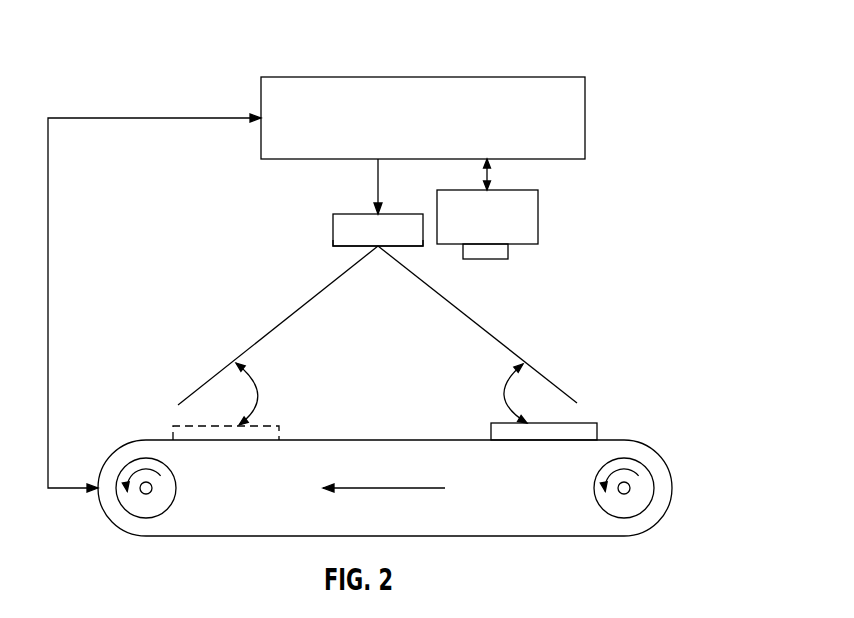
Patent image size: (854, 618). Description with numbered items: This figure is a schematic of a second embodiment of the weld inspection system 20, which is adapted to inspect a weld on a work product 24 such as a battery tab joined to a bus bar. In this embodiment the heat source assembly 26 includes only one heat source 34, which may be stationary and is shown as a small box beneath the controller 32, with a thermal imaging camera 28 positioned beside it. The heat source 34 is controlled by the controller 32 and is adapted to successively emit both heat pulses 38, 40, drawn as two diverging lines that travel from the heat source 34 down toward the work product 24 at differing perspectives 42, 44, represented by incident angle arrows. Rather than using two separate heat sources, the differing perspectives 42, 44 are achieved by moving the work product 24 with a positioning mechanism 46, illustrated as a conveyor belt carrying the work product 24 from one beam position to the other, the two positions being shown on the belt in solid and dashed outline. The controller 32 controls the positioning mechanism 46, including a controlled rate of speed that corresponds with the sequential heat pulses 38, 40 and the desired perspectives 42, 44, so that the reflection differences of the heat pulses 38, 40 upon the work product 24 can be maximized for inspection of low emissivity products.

The weld inspection system 20 is at (590, 45).
The work product 24 is at (263, 422).
The heat source assembly 26 is at (333, 226).
The thermal imaging camera 28 is at (538, 212).
The controller 32 is at (308, 77).
The heat source 34 is at (332, 238).
The heat pulse 38 is at (498, 338).
The heat pulse 40 is at (477, 324).
The perspective (incident angle) 42 is at (505, 404).
The perspective (incident angle) 44 is at (258, 372).
The positioning mechanism 46 is at (658, 451).